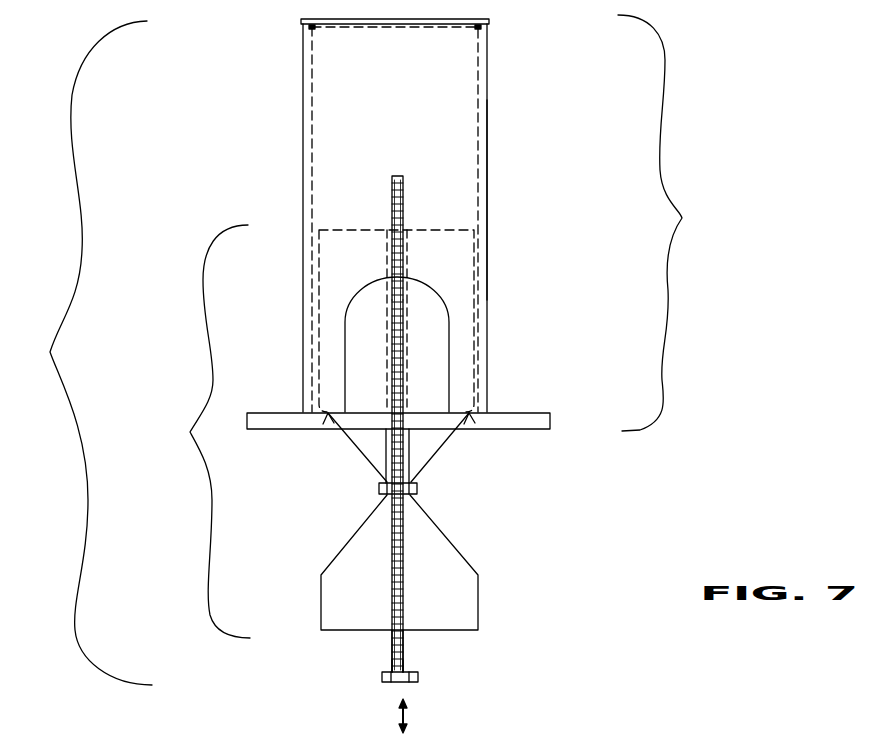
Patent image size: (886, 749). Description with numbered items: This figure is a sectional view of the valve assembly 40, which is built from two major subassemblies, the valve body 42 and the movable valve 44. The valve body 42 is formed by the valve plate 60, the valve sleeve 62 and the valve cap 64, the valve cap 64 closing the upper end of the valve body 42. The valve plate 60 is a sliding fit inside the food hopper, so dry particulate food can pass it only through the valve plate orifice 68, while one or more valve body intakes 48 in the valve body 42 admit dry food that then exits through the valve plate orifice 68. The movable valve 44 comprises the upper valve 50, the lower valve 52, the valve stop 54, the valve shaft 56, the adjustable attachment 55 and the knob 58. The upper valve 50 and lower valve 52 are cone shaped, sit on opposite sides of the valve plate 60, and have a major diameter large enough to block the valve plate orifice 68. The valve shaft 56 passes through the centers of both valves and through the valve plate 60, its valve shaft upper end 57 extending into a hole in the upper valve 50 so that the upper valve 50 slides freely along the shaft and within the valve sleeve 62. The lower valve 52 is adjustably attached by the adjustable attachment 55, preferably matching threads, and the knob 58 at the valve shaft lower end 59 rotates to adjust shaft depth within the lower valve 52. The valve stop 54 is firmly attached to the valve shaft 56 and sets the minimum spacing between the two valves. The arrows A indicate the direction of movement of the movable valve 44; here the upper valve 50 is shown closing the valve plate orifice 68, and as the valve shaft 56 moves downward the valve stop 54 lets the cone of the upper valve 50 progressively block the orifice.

The valve assembly 40 is at (82, 353).
The valve body 42 is at (513, 223).
The movable valve 44 is at (312, 431).
The valve body intake 48 is at (438, 343).
The upper valve 50 is at (447, 442).
The lower valve 52 is at (478, 590).
The valve stop 54 is at (417, 487).
The adjustable attachment 55 is at (393, 499).
The valve shaft 56 is at (405, 635).
The valve shaft upper end 57 is at (391, 177).
The knob 58 is at (380, 677).
The valve shaft lower end 59 is at (413, 663).
The valve plate 60 is at (550, 421).
The valve sleeve 62 is at (488, 158).
The valve cap 64 is at (300, 22).
The valve plate orifice 68 is at (332, 430).
The arrows A is at (410, 720).